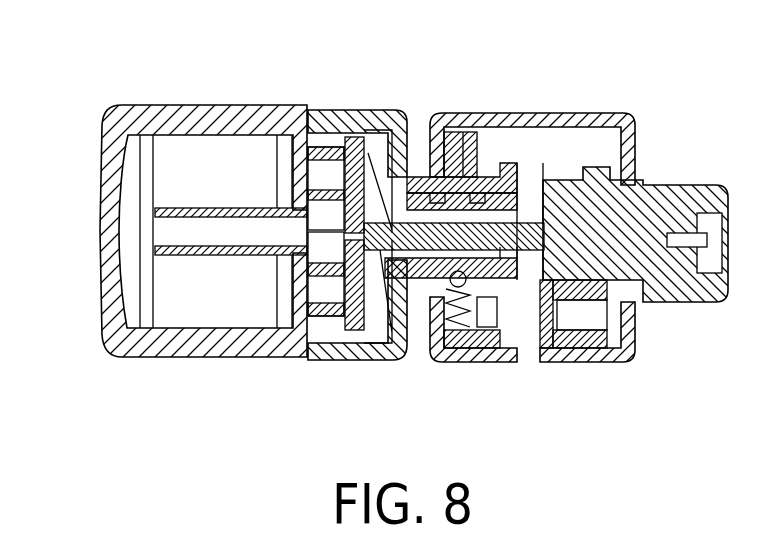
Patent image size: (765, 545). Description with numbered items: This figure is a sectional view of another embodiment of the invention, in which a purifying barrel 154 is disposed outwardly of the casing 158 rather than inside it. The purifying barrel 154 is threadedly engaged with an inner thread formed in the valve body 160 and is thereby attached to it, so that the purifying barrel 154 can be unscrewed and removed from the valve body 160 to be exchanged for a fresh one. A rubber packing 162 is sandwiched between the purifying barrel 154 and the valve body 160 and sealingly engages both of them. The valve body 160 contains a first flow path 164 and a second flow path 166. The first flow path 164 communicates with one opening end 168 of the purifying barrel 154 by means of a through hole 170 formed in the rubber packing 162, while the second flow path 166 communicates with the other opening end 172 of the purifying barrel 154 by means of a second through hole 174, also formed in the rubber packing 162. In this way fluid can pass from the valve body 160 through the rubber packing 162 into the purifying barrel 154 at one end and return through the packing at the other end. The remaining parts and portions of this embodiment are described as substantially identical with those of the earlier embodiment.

The purifying barrel 154 is at (258, 112).
The casing 158 is at (396, 305).
The valve body 160 is at (625, 212).
The rubber packing 162 is at (368, 154).
The first flow path 164 is at (468, 217).
The second flow path 166 is at (422, 258).
The one opening end 168 is at (323, 127).
The through hole 170 is at (390, 127).
The other opening end 172 is at (133, 217).
The through hole 174 is at (362, 264).